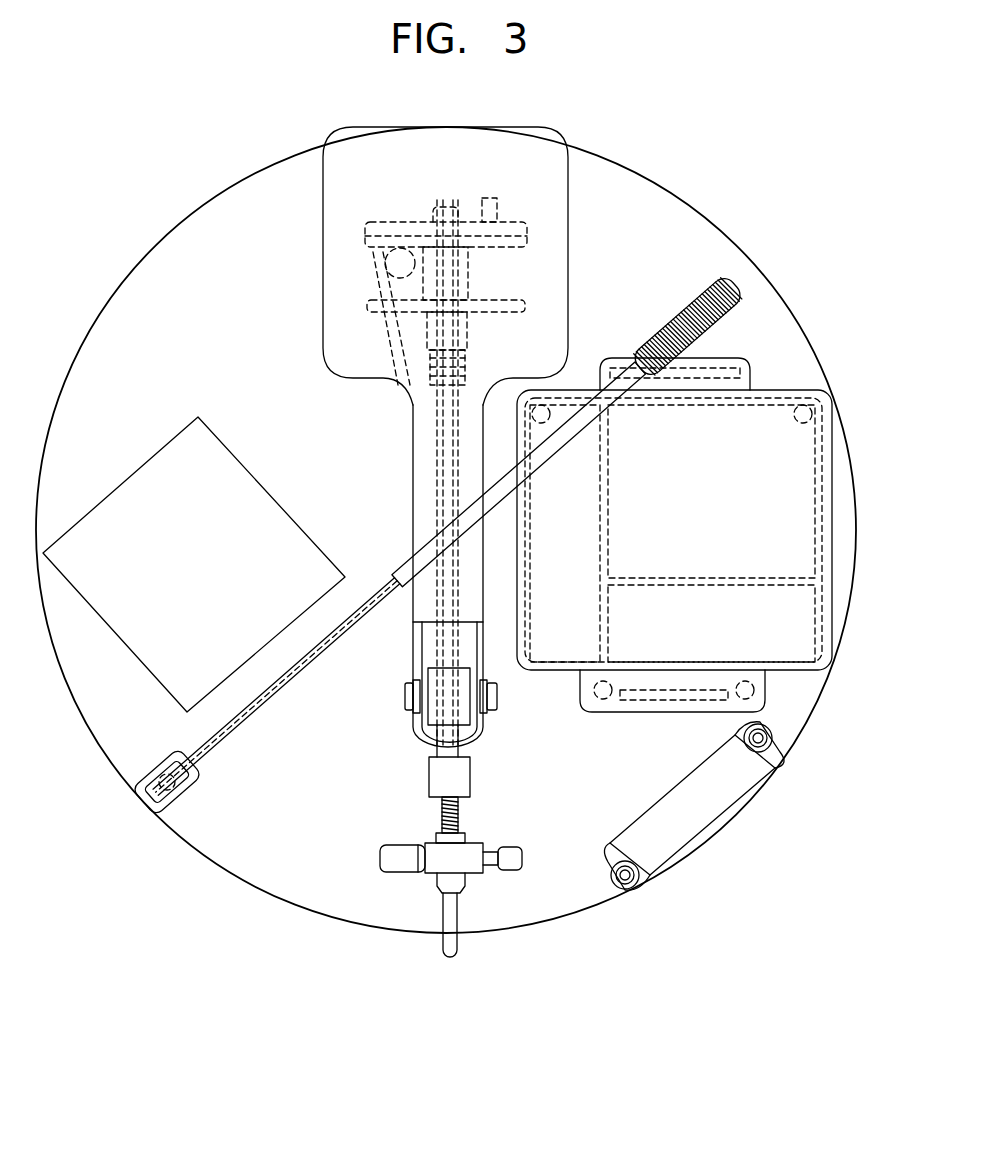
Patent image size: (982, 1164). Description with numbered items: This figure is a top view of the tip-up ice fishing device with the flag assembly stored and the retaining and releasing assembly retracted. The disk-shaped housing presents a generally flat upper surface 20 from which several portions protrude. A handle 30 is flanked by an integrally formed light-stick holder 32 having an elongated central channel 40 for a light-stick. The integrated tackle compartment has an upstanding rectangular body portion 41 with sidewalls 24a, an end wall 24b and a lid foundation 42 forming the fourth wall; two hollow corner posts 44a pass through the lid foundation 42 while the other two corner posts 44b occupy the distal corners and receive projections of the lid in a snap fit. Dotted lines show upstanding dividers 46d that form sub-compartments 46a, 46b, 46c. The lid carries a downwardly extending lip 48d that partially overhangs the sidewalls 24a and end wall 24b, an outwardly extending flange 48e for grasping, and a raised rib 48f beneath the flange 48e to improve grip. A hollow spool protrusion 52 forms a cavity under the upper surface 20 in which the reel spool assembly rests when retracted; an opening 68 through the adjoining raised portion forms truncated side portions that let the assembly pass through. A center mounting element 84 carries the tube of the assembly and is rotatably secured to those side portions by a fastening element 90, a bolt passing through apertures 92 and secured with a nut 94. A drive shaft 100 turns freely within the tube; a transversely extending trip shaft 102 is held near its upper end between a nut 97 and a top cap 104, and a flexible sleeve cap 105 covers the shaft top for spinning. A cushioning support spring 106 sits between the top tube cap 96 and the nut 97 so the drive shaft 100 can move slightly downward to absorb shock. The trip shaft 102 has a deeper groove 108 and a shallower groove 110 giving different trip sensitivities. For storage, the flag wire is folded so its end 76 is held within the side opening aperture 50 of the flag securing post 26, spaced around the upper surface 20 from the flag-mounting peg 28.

The upper surface 20 is at (200, 232).
The sidewalls 24a is at (530, 533).
The end wall 24b is at (712, 405).
The flag securing post 26 is at (150, 775).
The flag-mounting peg 28 is at (745, 275).
The handle 30 is at (732, 803).
The light-stick holder 32 is at (768, 756).
The elongated central channels 40 is at (772, 740).
The body portion 41 is at (830, 520).
The lid foundation 42 is at (648, 712).
The corner posts 44a is at (735, 690).
The corner posts 44b is at (541, 404).
The sub-compartment 46a is at (711, 491).
The sub-compartment 46b is at (711, 623).
The sub-compartment 46c is at (565, 533).
The upstanding dividers 46d is at (608, 440).
The lip 48d is at (525, 548).
The flange 48e is at (747, 372).
The raised rib 48f is at (723, 372).
The side opening aperture 50 is at (200, 775).
The spool protrusion 52 is at (537, 157).
The opening 68 is at (468, 645).
The end of the wire 76 is at (160, 790).
The center mounting element 84 is at (435, 672).
The fastening element 90 is at (406, 694).
The apertures 92 is at (413, 706).
The nut 94 is at (497, 694).
The top tube cap 96 is at (429, 766).
The nut 97 is at (436, 838).
The drive shaft 100 is at (440, 455).
The trip shaft 102 is at (395, 858).
The top cap 104 is at (465, 880).
The flexible sleeve cap 105 is at (455, 945).
The cushioning support spring 106 is at (442, 810).
The groove 108 is at (482, 848).
The groove 110 is at (425, 872).